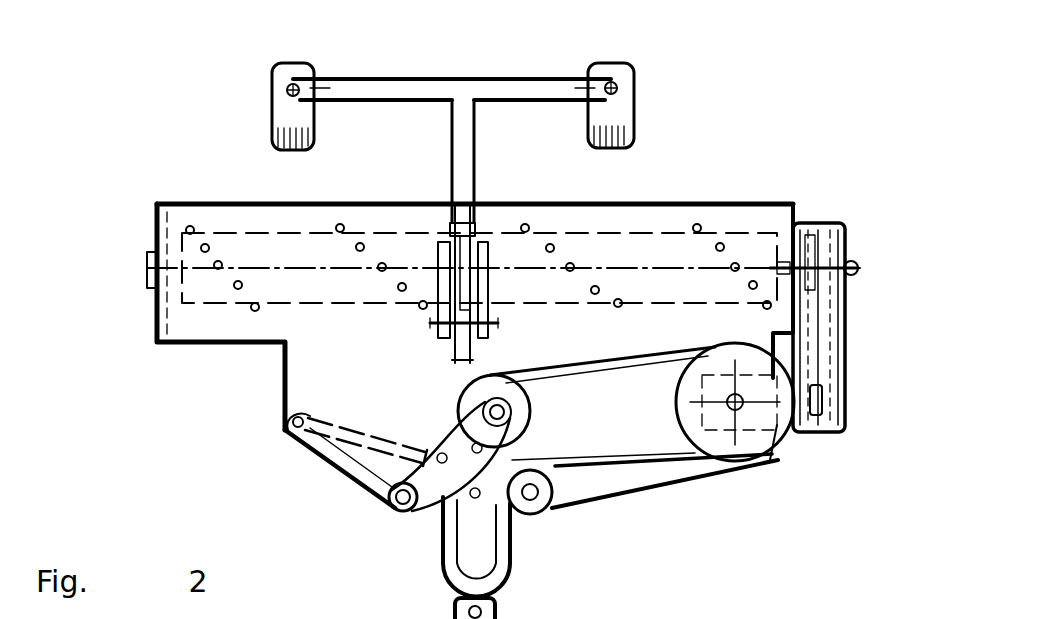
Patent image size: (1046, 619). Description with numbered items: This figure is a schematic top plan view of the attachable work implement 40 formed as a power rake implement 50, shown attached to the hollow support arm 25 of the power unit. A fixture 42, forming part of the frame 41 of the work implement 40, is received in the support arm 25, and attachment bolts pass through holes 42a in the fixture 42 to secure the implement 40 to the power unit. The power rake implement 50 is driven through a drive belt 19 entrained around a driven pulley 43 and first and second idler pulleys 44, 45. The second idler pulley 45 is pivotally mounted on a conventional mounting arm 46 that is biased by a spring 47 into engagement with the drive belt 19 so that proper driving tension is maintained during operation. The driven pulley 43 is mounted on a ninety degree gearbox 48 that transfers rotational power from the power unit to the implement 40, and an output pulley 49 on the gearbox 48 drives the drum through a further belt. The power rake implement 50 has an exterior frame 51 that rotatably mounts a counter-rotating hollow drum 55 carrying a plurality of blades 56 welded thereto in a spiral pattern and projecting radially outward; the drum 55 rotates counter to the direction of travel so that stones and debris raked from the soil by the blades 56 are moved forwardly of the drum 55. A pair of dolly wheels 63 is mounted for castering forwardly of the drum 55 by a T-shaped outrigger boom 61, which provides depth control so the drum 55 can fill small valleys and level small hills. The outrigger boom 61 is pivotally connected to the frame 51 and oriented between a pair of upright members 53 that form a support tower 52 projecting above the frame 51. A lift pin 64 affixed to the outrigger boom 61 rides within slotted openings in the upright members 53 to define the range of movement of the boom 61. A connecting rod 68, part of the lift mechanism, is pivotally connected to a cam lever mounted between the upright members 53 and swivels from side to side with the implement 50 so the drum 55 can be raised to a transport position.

The drive belt 19 is at (613, 455).
The support arm 25 is at (520, 615).
The work implement 40 is at (183, 425).
The frame 41 is at (368, 500).
The fixture 42 is at (512, 555).
The holes 42a is at (442, 562).
The driven pulley 43 is at (727, 453).
The first idler pulley 44 is at (577, 497).
The second idler pulley 45 is at (468, 398).
The mounting arm 46 is at (345, 477).
The spring 47 is at (300, 432).
The gearbox 48 is at (783, 423).
The output pulley 49 is at (827, 397).
The power rake implement 50 is at (160, 163).
The exterior frame 51 is at (800, 220).
The support tower 52 is at (488, 242).
The upright members 53 is at (440, 312).
The drum 55 is at (777, 233).
The blades 56 is at (205, 252).
The outrigger boom 61 is at (463, 100).
The dolly wheels 63 is at (270, 118).
The lift pin 64 is at (445, 225).
The connecting rod 68 is at (457, 353).